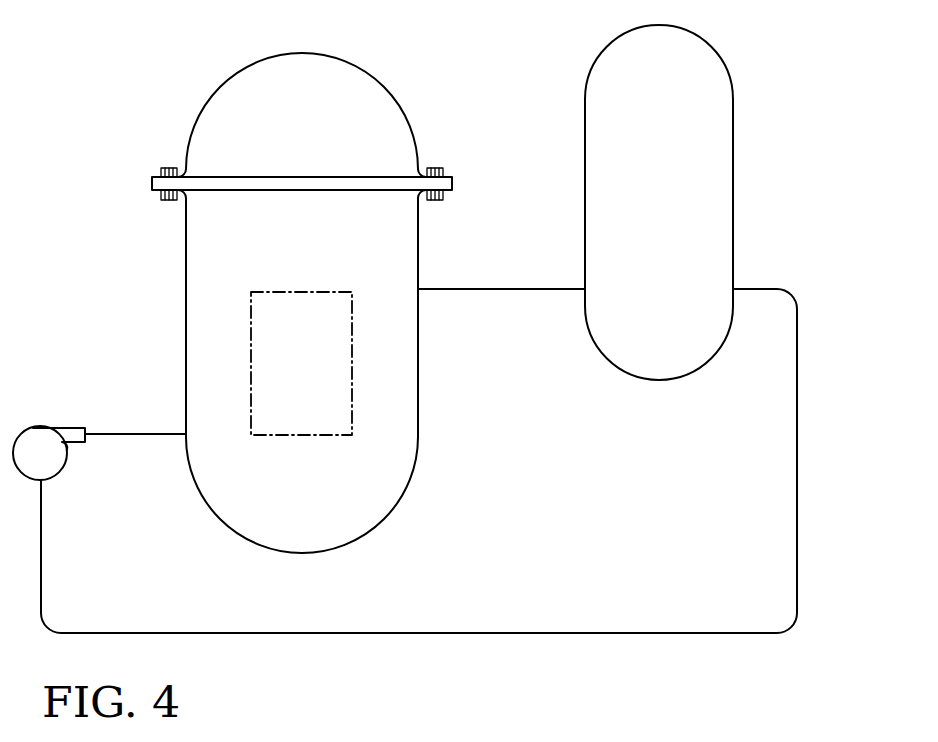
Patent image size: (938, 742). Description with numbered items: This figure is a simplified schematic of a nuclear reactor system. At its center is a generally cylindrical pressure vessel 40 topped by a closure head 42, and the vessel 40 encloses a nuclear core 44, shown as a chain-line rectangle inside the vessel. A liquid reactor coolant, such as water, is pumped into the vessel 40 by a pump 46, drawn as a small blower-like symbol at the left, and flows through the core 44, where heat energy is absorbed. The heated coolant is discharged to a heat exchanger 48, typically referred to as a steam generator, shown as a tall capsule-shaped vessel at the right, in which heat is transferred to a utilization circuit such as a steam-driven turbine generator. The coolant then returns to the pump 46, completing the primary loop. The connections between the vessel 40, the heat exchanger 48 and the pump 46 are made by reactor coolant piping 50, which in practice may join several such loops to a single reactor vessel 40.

The pressure vessel 40 is at (305, 303).
The closure head 42 is at (202, 122).
The nuclear core 44 is at (250, 349).
The pump 46 is at (35, 427).
The heat exchanger 48 is at (733, 137).
The reactor coolant piping 50 is at (797, 558).